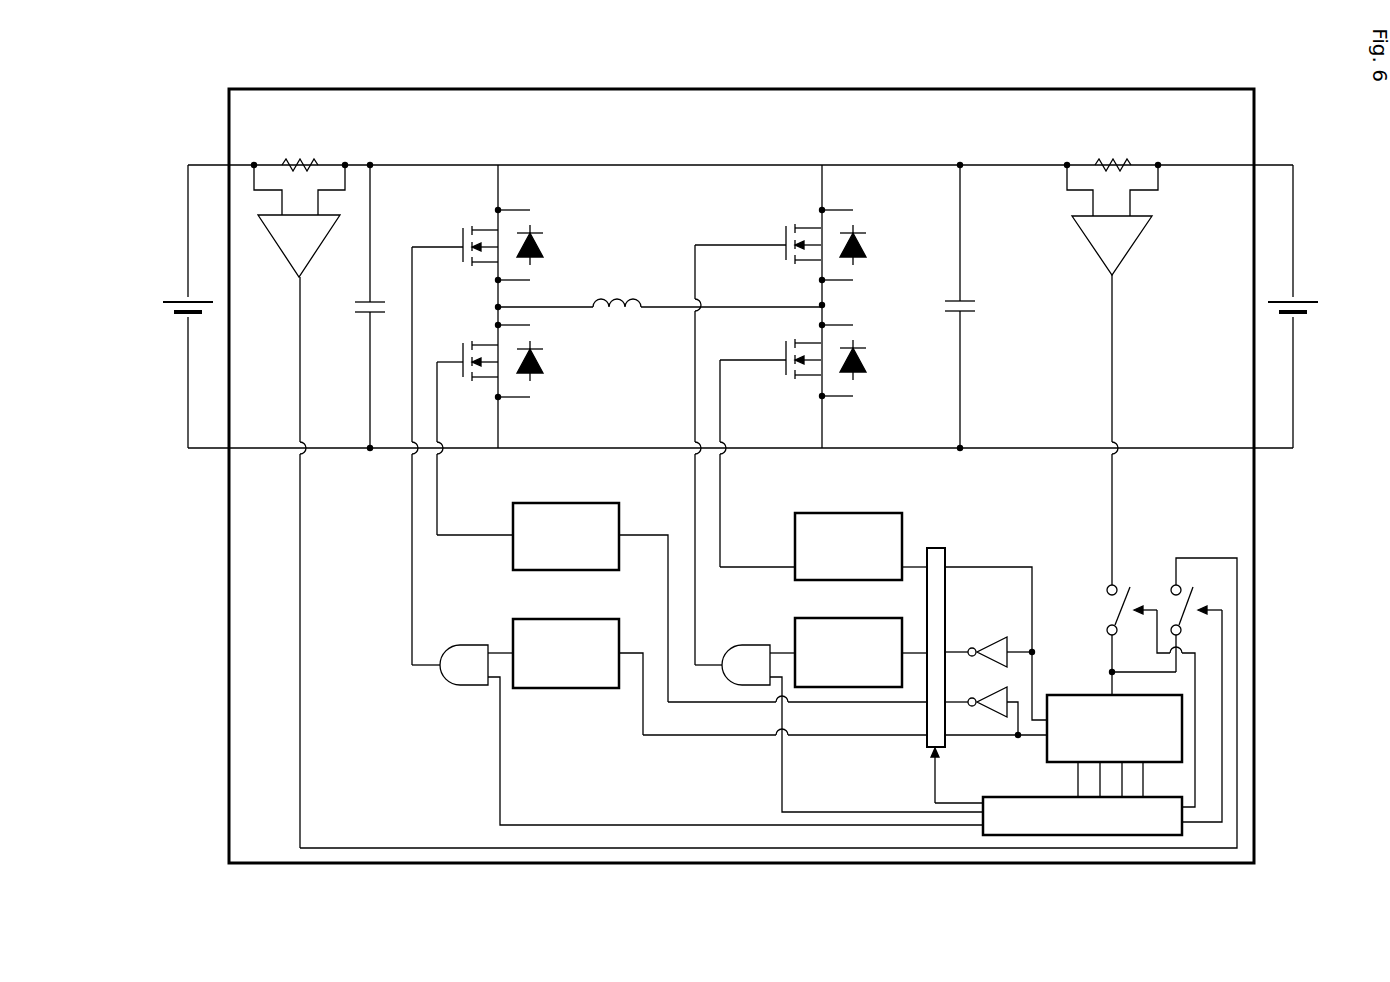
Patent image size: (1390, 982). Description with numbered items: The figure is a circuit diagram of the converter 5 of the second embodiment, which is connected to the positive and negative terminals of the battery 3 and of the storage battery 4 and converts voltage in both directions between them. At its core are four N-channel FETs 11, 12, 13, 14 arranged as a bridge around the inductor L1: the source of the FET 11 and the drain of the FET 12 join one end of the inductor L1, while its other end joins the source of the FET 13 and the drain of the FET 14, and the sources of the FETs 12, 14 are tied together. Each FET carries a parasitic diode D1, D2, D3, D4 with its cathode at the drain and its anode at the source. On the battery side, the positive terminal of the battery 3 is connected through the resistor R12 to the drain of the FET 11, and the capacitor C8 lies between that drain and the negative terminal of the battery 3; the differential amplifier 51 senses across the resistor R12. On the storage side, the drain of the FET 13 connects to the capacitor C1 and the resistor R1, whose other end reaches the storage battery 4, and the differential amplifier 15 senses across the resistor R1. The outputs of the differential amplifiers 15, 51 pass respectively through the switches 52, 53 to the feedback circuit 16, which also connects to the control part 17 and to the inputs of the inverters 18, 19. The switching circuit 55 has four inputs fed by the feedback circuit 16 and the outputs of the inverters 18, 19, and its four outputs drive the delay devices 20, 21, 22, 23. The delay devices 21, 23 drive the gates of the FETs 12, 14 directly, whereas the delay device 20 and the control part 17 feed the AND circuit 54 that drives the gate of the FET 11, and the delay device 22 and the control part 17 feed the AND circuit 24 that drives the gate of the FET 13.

The converter 5 is at (229, 106).
The battery 3 is at (172, 290).
The storage battery 4 is at (1308, 288).
The FET 11 is at (465, 228).
The FET 12 is at (462, 340).
The FET 13 is at (787, 222).
The FET 14 is at (780, 358).
The differential amplifier 15 is at (1090, 262).
The feedback circuit 16 is at (1080, 684).
The control part 17 is at (1036, 797).
The inverter 18 is at (997, 692).
The inverter 19 is at (990, 636).
The delay device 20 is at (531, 618).
The delay device 21 is at (531, 502).
The delay device 22 is at (814, 619).
The delay device 23 is at (814, 514).
The AND circuit 24 is at (744, 642).
The differential amplifier 51 is at (276, 258).
The switch 52 is at (1092, 594).
The switch 53 is at (1158, 586).
The AND circuit 54 is at (456, 688).
The switching circuit 55 is at (938, 545).
The resistor R12 is at (324, 154).
The resistor R1 is at (1136, 155).
The capacitor C8 is at (357, 320).
The capacitor C1 is at (988, 303).
The inductor L1 is at (622, 296).
The diode D1 is at (552, 242).
The diode D2 is at (552, 353).
The diode D3 is at (874, 238).
The diode D4 is at (874, 353).